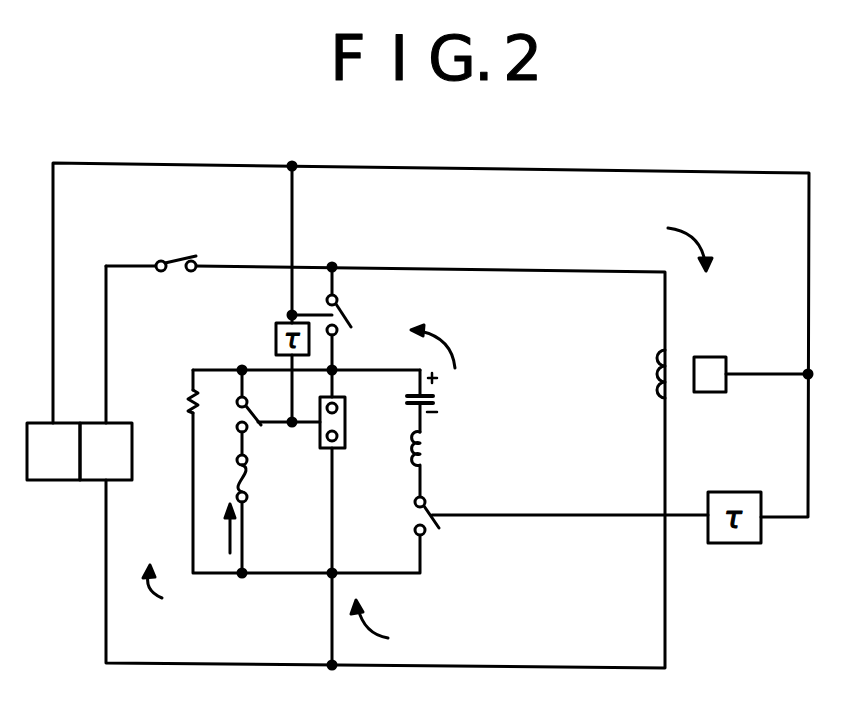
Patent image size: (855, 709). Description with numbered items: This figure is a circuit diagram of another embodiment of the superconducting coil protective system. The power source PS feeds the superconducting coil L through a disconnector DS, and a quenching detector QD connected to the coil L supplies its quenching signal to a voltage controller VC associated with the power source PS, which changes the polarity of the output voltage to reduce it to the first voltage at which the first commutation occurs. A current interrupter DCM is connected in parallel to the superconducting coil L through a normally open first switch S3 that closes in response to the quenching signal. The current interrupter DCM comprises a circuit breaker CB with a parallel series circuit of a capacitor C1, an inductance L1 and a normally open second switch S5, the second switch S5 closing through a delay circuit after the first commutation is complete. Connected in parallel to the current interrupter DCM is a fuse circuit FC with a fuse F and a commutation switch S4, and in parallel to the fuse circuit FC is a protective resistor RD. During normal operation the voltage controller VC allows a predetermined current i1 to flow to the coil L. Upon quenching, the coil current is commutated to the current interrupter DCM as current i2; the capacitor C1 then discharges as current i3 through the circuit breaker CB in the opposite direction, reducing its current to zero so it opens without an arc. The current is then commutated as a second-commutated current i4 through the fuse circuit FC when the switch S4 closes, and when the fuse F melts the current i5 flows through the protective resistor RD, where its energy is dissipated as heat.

The voltage controller VC is at (53, 451).
The power source PS is at (106, 451).
The disconnector DS is at (183, 283).
The first switch S3 is at (358, 332).
The commutation switch S4 is at (278, 412).
The second switch S5 is at (561, 509).
The protective resistor RD is at (169, 401).
The fuse F is at (256, 514).
The fuse circuit FC is at (301, 538).
The circuit breaker CB is at (357, 531).
The capacitor C1 is at (438, 401).
The inductance L1 is at (436, 465).
The current interrupter DCM is at (403, 526).
The superconducting coil L is at (647, 375).
The quenching detector QD is at (753, 353).
The predetermined current i1 is at (700, 245).
The first-commutated current i2 is at (378, 623).
The capacitor discharge current i3 is at (446, 344).
The second-commutated current i4 is at (217, 533).
The third-commutated current i5 is at (162, 568).